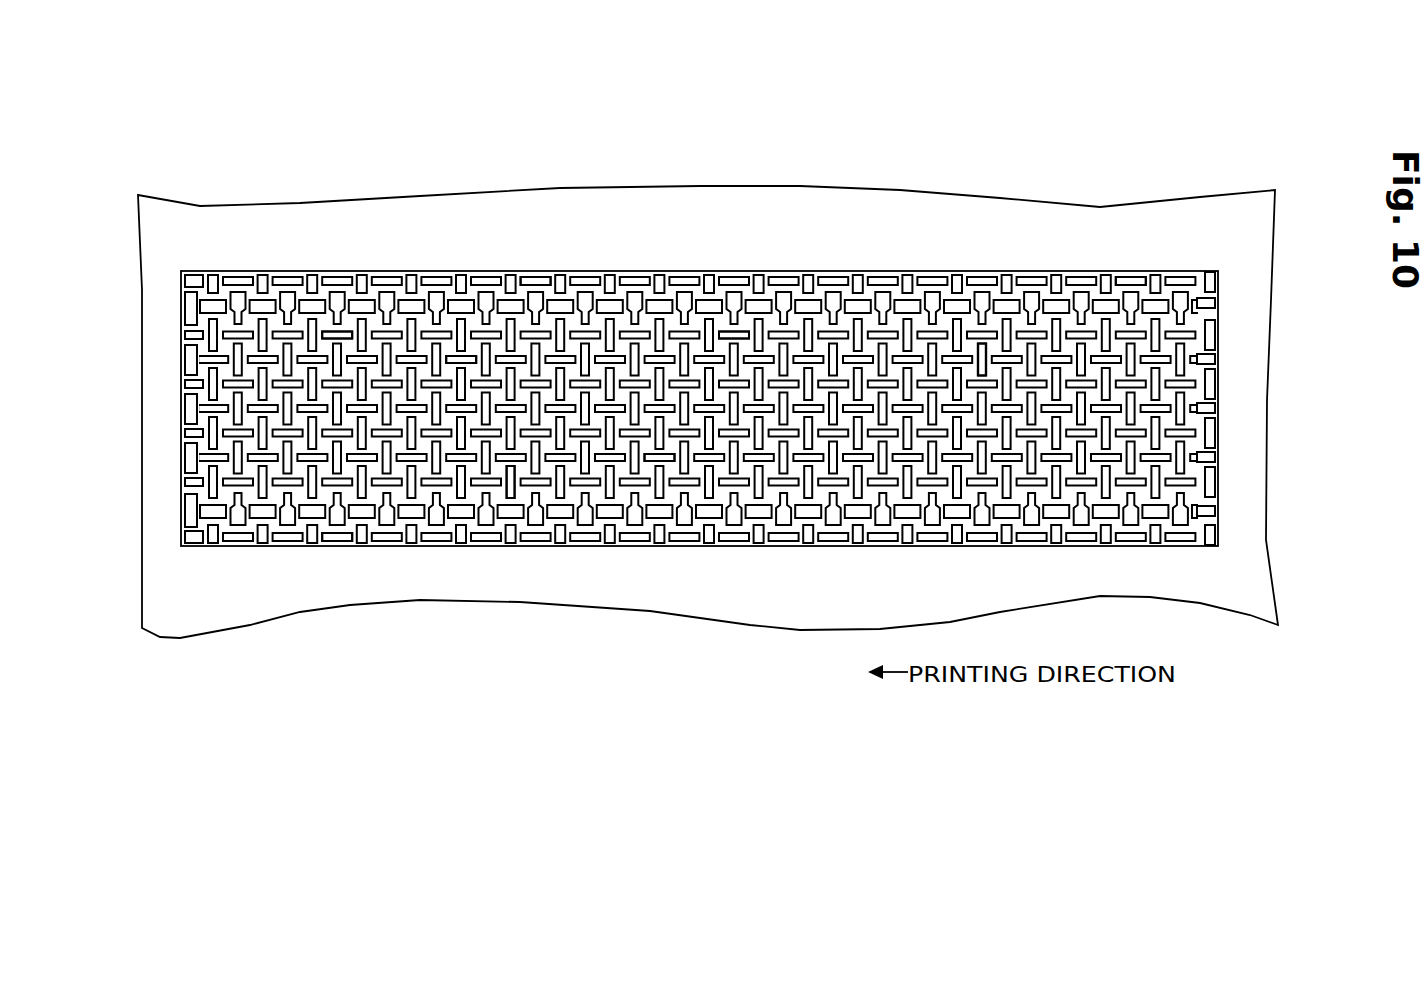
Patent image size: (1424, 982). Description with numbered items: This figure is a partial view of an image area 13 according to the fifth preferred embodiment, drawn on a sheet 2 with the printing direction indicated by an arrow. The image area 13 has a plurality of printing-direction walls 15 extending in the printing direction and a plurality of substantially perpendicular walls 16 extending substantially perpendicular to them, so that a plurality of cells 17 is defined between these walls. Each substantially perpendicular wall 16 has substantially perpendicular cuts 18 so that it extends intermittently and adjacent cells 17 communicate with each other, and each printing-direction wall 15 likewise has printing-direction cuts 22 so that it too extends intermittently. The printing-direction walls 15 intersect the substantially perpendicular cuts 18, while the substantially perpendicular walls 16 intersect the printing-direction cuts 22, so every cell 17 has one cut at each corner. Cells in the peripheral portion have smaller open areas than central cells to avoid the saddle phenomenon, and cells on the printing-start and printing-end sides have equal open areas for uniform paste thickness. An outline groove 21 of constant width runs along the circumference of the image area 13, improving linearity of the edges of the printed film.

The printing medium 2 is at (198, 199).
The image area 13 is at (635, 262).
The printing-direction walls 15 is at (743, 332).
The substantially perpendicular walls 16 is at (985, 355).
The cells 17 is at (452, 363).
The substantially perpendicular cuts 18 is at (340, 342).
The outline groove 21 is at (1126, 270).
The printing-direction cuts 22 is at (512, 481).